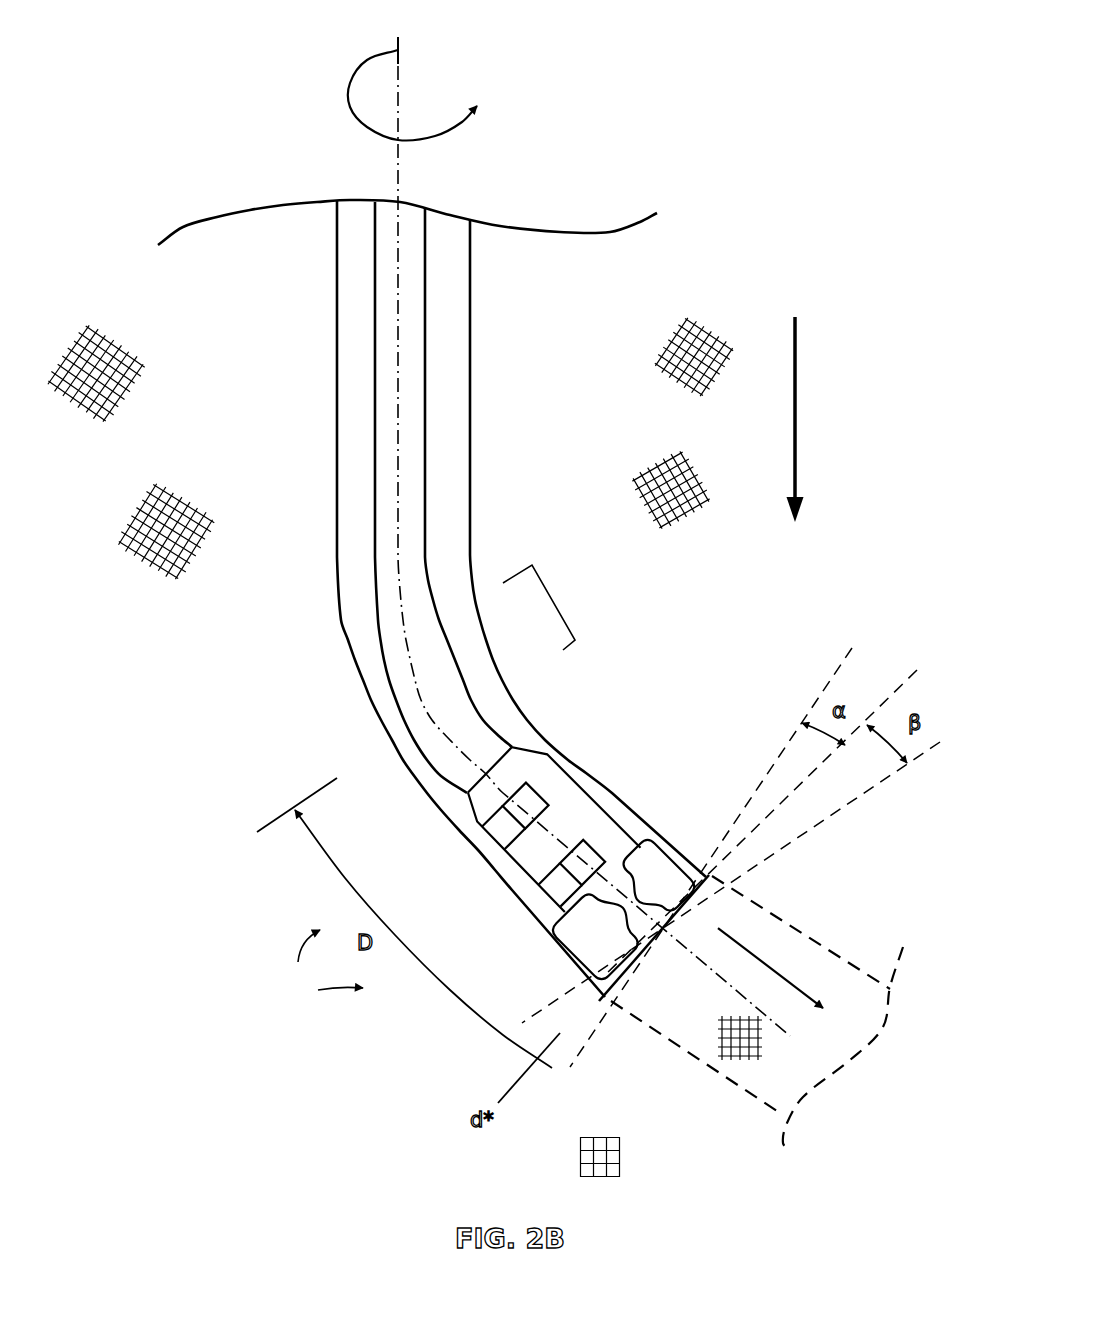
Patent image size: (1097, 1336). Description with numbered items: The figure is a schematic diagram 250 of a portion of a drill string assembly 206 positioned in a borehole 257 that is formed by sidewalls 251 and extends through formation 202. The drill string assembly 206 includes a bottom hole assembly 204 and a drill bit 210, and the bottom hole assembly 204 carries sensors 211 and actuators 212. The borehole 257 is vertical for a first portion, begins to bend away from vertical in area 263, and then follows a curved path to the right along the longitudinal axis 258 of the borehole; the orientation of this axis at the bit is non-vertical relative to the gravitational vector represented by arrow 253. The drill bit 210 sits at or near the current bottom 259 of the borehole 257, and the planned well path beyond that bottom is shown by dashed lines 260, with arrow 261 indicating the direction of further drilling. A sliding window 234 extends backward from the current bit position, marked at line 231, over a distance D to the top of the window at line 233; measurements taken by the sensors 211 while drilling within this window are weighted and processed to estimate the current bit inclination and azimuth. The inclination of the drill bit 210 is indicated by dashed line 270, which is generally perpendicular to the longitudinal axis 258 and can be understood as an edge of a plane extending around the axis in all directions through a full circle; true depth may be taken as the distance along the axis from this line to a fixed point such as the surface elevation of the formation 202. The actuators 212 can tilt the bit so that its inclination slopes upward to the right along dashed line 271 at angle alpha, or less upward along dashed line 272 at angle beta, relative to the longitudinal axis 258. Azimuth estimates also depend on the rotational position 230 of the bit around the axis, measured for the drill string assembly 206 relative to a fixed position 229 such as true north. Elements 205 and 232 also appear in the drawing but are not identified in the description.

The formation 202 is at (145, 328).
The bottom hole assembly 204 is at (525, 740).
The inner tubular 205 is at (425, 383).
The drill string assembly 206 is at (373, 290).
The drill bit 210 is at (650, 843).
The sensors 211 is at (537, 793).
The actuators 212 is at (593, 850).
The fixed position 229 is at (400, 43).
The rotational position 230 is at (350, 90).
The line 231 is at (507, 1088).
The arc length 232 is at (345, 878).
The line 233 is at (277, 815).
The sliding window 234 is at (315, 965).
The schematic diagram 250 is at (718, 58).
The sidewalls 251 is at (335, 403).
The arrow 253 is at (797, 393).
The borehole 257 is at (447, 457).
The longitudinal axis 258 is at (398, 180).
The current bottom 259 is at (617, 980).
The dashed lines 260 is at (800, 940).
The arrow 261 is at (735, 938).
The area 263 is at (543, 583).
The dashed line 270 is at (900, 683).
The dashed line 271 is at (843, 662).
The dashed line 272 is at (877, 787).